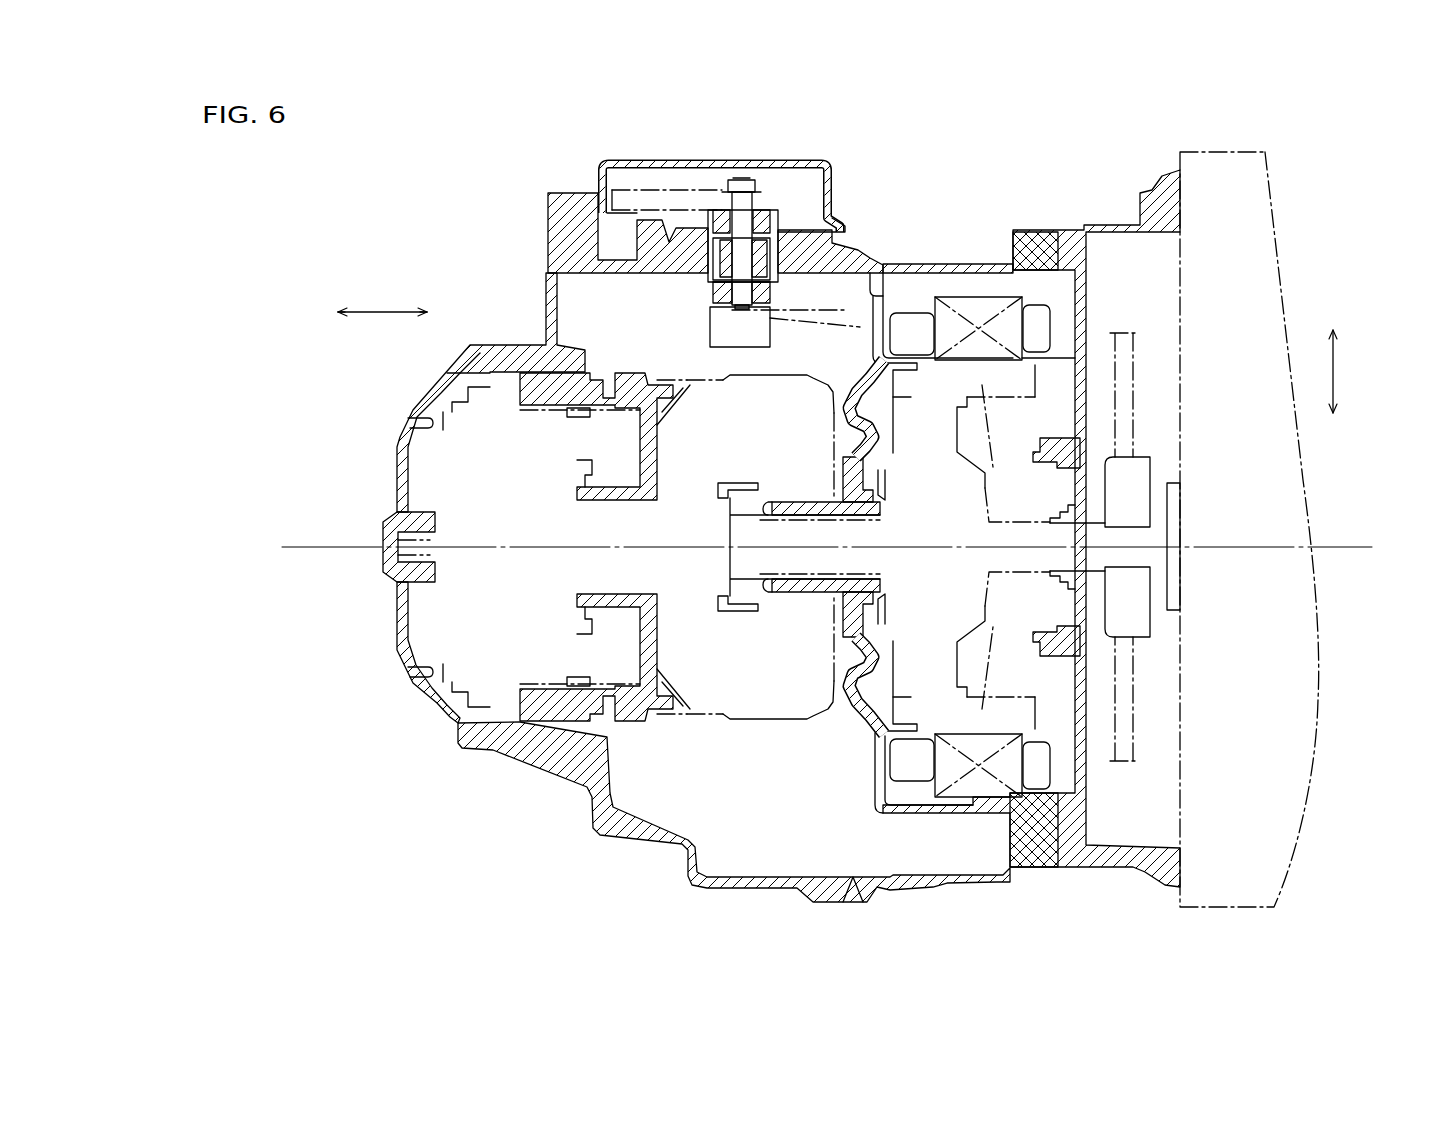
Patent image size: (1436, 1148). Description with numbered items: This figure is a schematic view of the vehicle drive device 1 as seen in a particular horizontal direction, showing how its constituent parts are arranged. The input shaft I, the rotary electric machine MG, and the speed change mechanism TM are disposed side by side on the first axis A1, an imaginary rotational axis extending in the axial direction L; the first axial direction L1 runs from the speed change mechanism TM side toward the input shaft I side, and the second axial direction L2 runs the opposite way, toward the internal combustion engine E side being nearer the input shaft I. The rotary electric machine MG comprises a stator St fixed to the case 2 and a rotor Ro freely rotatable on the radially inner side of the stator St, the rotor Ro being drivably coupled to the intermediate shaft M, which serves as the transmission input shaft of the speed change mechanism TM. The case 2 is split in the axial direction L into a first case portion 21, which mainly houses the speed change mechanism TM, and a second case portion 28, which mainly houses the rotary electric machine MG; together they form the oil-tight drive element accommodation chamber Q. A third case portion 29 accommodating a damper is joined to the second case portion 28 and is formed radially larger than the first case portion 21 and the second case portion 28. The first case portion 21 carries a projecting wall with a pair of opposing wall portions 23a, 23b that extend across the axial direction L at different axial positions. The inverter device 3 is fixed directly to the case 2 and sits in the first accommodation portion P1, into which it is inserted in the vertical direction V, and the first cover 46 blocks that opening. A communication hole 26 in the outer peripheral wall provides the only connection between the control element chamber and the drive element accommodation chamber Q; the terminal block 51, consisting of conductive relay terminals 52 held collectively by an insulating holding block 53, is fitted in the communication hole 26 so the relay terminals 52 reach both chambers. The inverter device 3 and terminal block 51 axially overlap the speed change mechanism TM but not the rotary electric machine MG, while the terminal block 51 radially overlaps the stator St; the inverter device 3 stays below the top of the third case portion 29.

The vehicle drive device 1 is at (670, 545).
The case 2 is at (979, 514).
The inverter device 3 is at (596, 168).
The first case portion 21 is at (848, 242).
The opposing wall portion 23a is at (556, 240).
The opposing wall portion 23b is at (846, 236).
The communication hole 26 is at (698, 274).
The second case portion 28 is at (975, 262).
The third case portion 29 is at (1106, 220).
The first cover 46 is at (627, 184).
The terminal block 51 is at (728, 180).
The relay terminal 52 is at (744, 262).
The holding block 53 is at (757, 202).
The first accommodation portion P1 is at (823, 199).
The drive element accommodation chamber Q is at (681, 364).
The stator St is at (995, 298).
The rotor Ro is at (982, 392).
The rotary electric machine MG is at (1017, 564).
The intermediate shaft M is at (800, 525).
The speed change mechanism TM is at (760, 724).
The input shaft I is at (1157, 540).
The internal combustion engine E is at (1268, 262).
The first axis A1 is at (1327, 548).
The vertical direction V is at (1343, 371).
The axial direction L is at (381, 304).
The first axial direction L1 is at (436, 313).
The second axial direction L2 is at (327, 313).